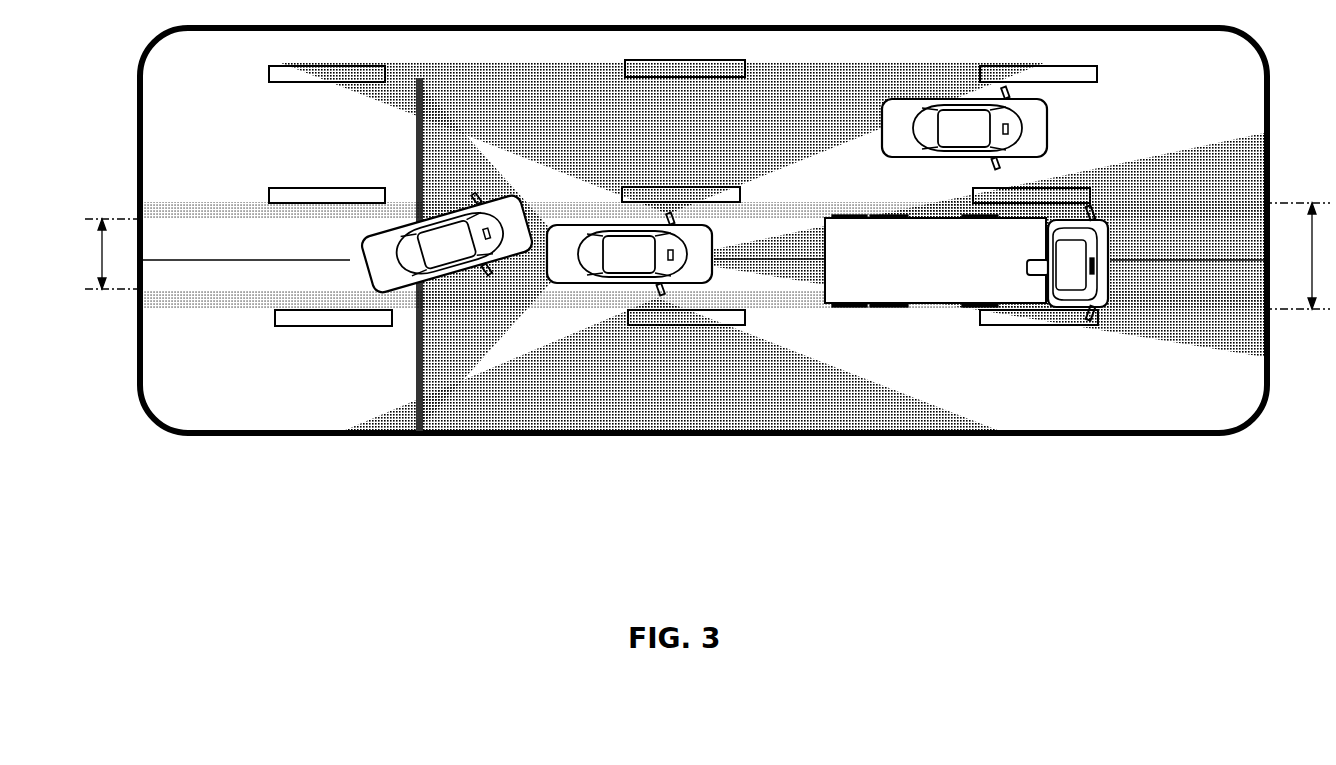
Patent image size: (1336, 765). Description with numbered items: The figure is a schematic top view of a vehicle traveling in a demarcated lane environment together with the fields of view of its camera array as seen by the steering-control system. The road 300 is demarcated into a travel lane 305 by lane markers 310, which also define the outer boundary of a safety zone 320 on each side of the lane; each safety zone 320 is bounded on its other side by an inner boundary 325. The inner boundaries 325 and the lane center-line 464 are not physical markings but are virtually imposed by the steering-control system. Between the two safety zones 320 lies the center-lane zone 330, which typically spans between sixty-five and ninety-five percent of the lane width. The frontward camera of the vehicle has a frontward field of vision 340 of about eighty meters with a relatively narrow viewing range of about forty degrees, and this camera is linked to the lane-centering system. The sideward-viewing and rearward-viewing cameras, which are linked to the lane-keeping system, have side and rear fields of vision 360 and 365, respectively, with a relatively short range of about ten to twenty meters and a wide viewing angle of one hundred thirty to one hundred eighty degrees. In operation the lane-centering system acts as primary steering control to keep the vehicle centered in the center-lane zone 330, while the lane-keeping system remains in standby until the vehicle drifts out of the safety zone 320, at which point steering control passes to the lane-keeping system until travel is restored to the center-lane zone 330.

The road 300 is at (232, 113).
The travel lane 305 is at (1299, 256).
The lane markers 310 is at (297, 187).
The safety zone 320 is at (212, 215).
The inner boundary 325 is at (333, 227).
The center-lane zone 330 is at (112, 254).
The frontward field of vision 340 is at (813, 256).
The side viewing field of vision 360 is at (617, 139).
The rear viewing field of vision 365 is at (466, 162).
The lane center-line 464 is at (232, 258).